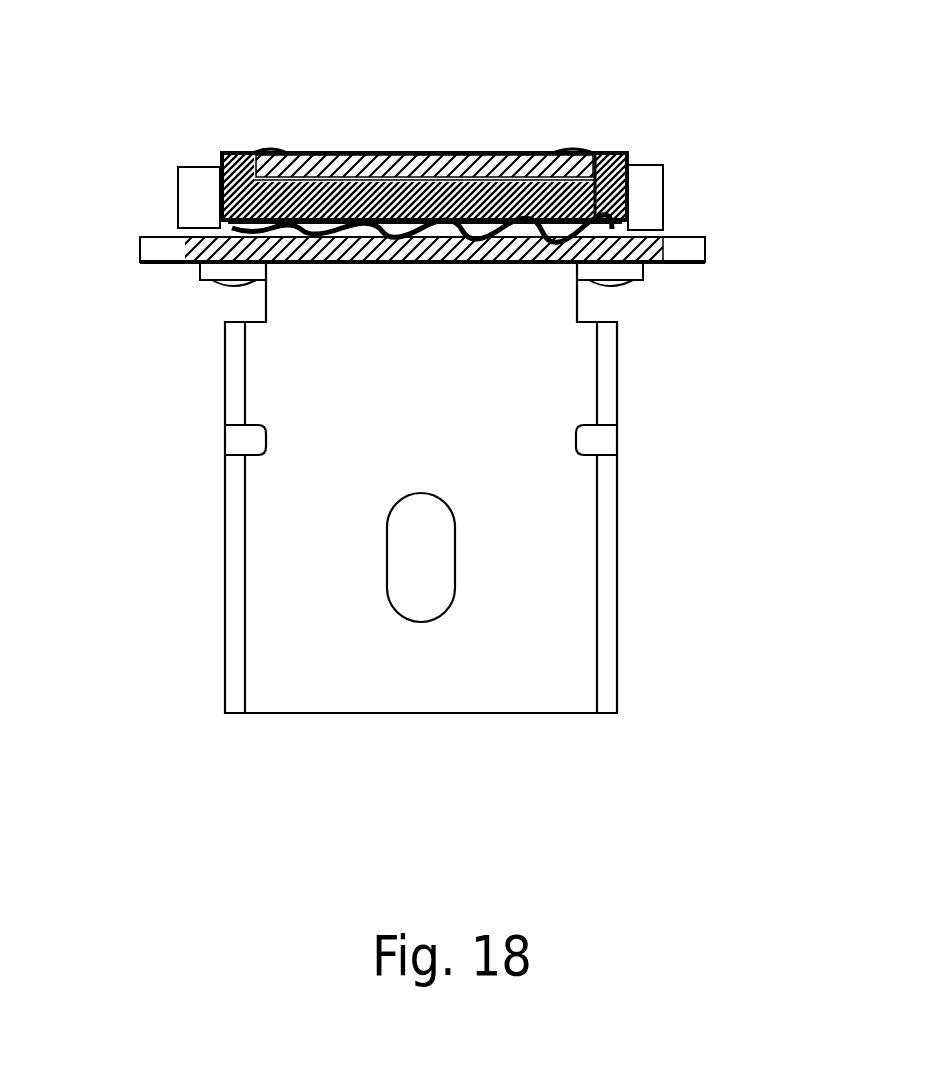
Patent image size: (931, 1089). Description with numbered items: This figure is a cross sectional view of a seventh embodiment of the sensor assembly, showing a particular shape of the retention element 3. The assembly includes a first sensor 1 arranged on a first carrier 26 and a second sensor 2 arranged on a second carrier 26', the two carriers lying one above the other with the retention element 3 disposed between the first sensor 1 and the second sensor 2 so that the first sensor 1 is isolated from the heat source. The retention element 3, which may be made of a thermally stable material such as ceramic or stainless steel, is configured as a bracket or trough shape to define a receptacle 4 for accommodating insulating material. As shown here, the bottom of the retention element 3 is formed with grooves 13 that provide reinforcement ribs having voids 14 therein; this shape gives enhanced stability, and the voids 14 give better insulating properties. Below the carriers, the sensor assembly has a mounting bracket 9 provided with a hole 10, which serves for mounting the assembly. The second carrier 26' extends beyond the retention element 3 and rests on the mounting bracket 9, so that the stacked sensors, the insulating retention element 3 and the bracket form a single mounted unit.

The first sensor 1 is at (475, 230).
The second sensor 2 is at (399, 488).
The retention element 3 is at (627, 222).
The receptacle 4 is at (617, 160).
The mounting bracket 9 is at (555, 523).
The hole 10 is at (407, 573).
The grooves 13 is at (510, 240).
The voids 14 is at (552, 235).
The first carrier 26 is at (424, 107).
The second carrier 26' is at (509, 250).